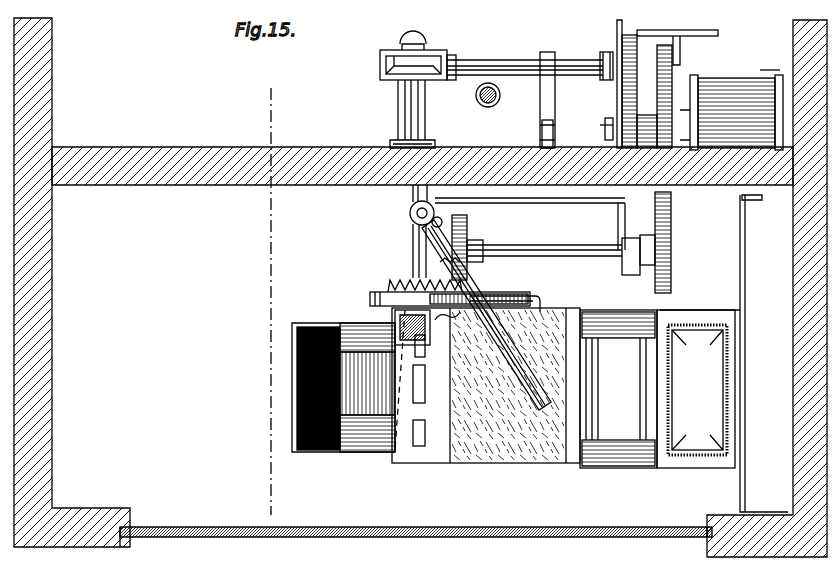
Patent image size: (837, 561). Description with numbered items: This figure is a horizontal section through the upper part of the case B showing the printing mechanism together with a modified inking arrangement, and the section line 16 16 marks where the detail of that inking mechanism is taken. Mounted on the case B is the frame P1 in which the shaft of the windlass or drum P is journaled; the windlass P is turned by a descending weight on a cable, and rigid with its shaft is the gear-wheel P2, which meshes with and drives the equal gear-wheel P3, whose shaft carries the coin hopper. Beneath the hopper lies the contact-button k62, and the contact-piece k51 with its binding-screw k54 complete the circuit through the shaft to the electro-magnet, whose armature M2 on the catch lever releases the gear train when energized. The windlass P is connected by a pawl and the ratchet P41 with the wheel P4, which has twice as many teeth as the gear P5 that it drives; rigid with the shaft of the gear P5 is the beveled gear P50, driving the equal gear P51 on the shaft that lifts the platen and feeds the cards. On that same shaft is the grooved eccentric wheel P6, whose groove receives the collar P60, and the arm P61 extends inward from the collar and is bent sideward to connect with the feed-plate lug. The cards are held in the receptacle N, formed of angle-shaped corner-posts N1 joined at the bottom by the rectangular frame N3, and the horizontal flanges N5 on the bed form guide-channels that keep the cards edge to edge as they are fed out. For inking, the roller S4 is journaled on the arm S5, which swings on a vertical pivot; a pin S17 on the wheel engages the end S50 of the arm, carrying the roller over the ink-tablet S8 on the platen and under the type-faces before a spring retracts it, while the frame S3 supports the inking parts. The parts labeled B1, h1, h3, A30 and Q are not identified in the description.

The section line 16 is at (271, 301).
The case B is at (420, 287).
The frame beam B1 is at (322, 147).
The bearing box h1 is at (432, 84).
The contact-button k62 is at (400, 114).
The shaft h3 is at (504, 60).
The rod A30 is at (487, 107).
The contact-piece k51 is at (540, 100).
The binding-screw k54 is at (540, 133).
The gear-wheel P3 is at (603, 55).
The gear-wheel P2 is at (622, 106).
The frame P1 is at (605, 128).
The armature M2 is at (662, 62).
The wheel P4 is at (672, 96).
The windlass P is at (731, 112).
The ratchet P41 is at (768, 62).
The box Q is at (688, 100).
The arm S5 is at (410, 213).
The end of arm S50 is at (413, 266).
The beveled gear P50 is at (470, 236).
The gear P5 is at (676, 242).
The inking-roller S4 is at (540, 316).
The pin S17 is at (464, 270).
The gear P51 is at (398, 282).
The collar P60 is at (370, 300).
The eccentric wheel P6 is at (368, 292).
The arm P61 is at (508, 287).
The frame S3 is at (446, 323).
The ink-tablet S8 is at (497, 445).
The horizontal flanges N5 is at (625, 450).
The lower rectangular frame N3 is at (704, 312).
The card-receptacle N is at (722, 388).
The corner-posts N1 is at (697, 390).